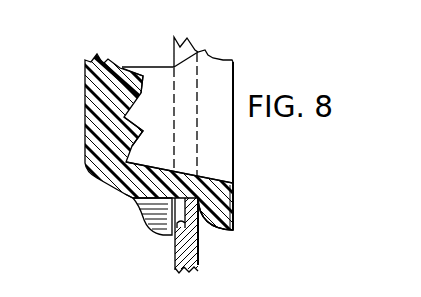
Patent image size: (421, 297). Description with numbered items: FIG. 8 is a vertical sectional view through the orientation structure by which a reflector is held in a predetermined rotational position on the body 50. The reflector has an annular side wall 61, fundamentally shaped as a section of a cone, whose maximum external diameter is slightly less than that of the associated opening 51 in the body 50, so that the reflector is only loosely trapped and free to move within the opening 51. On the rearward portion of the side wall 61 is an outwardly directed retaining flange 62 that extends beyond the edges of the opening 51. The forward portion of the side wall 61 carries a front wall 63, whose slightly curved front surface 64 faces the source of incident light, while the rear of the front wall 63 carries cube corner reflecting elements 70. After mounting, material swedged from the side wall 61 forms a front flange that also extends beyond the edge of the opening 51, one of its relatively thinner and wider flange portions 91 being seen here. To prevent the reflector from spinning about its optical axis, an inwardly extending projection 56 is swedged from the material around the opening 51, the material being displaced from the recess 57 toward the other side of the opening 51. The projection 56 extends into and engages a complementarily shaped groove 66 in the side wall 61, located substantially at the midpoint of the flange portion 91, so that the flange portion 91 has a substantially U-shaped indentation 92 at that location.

The body 50 is at (200, 258).
The opening 51 is at (198, 44).
The projection 56 is at (208, 222).
The recess 57 is at (172, 223).
The side wall 61 is at (195, 178).
The retaining flange 62 is at (226, 217).
The front wall 63 is at (135, 43).
The front surface 64 is at (84, 117).
The groove 66 is at (140, 222).
The reflecting elements 70 is at (131, 121).
The flange portion 91 is at (145, 229).
The U-shaped indentation 92 is at (147, 197).